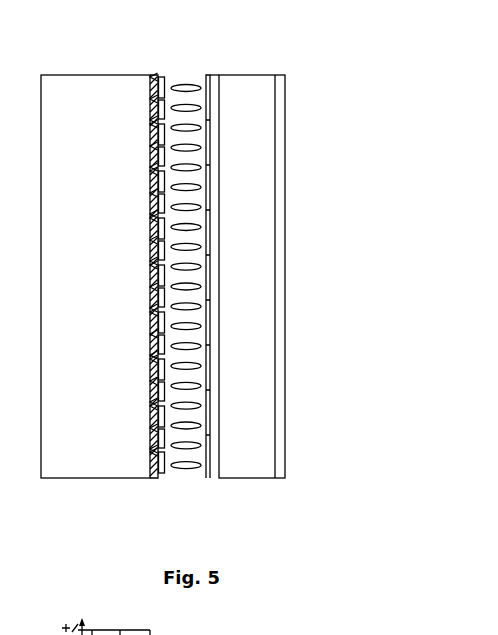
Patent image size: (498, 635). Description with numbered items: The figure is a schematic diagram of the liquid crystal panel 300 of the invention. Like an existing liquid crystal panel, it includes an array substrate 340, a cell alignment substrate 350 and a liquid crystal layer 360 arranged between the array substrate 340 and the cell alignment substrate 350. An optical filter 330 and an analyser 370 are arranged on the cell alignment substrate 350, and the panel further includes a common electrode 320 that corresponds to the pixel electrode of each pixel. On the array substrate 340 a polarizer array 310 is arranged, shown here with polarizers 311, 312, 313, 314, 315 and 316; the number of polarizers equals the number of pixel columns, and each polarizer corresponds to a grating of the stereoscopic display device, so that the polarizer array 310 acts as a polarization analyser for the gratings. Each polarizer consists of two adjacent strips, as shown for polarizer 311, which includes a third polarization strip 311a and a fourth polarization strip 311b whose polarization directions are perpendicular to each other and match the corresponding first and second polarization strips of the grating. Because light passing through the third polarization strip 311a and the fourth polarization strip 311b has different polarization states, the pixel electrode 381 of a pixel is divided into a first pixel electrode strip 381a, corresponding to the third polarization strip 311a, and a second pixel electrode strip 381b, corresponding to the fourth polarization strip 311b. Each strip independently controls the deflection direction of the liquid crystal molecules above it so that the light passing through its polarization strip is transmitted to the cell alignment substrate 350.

The display device 300 is at (184, 518).
The polarizer array 310 is at (152, 69).
The polarizer 311 is at (114, 239).
The third polarization strip 311a is at (155, 81).
The fourth polarization strip 311b is at (155, 108).
The polarizer 312 is at (150, 124).
The polarizer 313 is at (150, 171).
The polarizer 314 is at (150, 218).
The polarizer 315 is at (150, 265).
The polarizer 316 is at (150, 312).
The common electrode 320 is at (206, 76).
The optical filter 330 is at (212, 78).
The array substrate 340 is at (100, 264).
The cell alignment substrate 350 is at (260, 264).
The liquid crystal layer 360 is at (185, 80).
The analyser 370 is at (276, 366).
The pixel electrode 381 is at (219, 450).
The first pixel electrode strip 381a is at (166, 401).
The second pixel electrode strip 381b is at (163, 372).